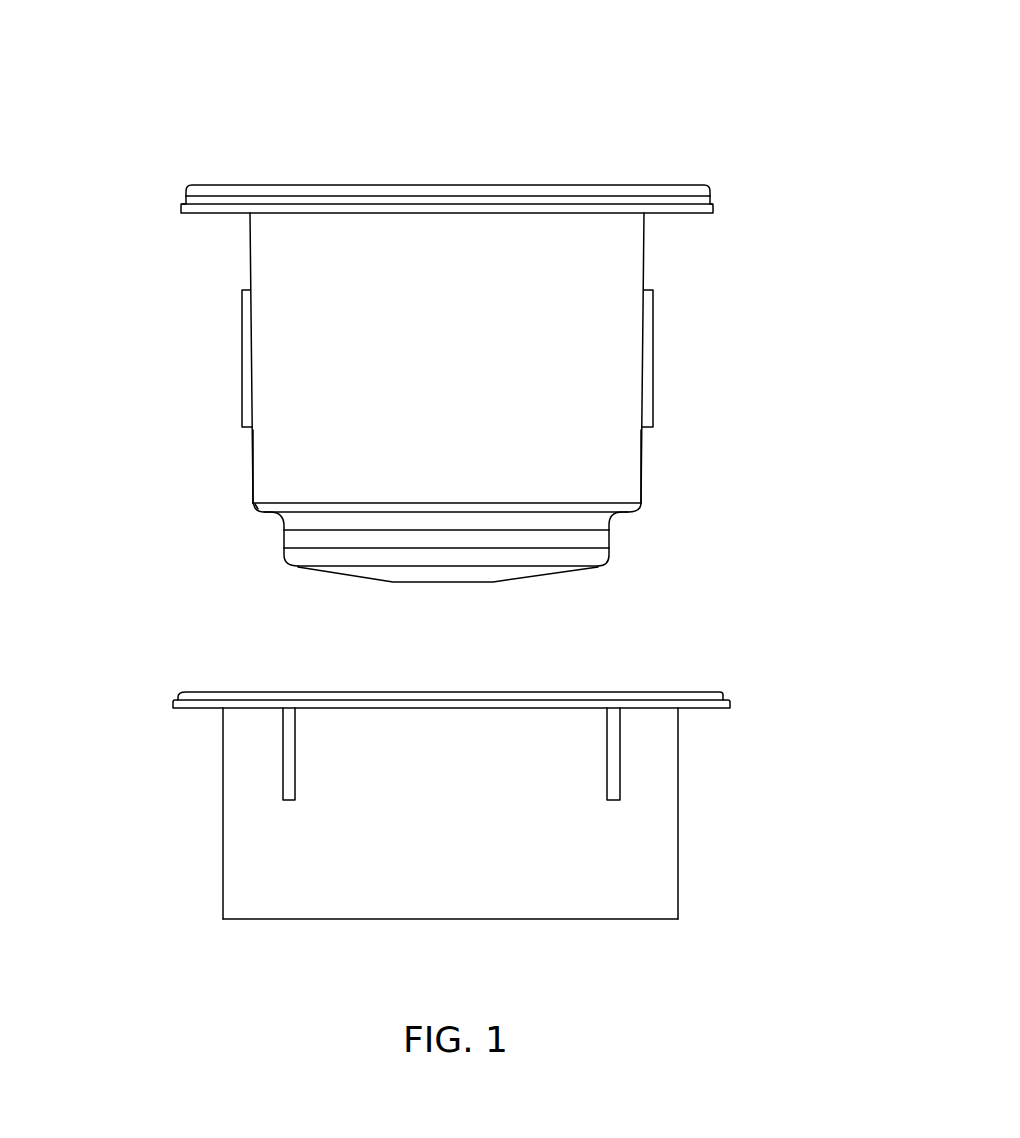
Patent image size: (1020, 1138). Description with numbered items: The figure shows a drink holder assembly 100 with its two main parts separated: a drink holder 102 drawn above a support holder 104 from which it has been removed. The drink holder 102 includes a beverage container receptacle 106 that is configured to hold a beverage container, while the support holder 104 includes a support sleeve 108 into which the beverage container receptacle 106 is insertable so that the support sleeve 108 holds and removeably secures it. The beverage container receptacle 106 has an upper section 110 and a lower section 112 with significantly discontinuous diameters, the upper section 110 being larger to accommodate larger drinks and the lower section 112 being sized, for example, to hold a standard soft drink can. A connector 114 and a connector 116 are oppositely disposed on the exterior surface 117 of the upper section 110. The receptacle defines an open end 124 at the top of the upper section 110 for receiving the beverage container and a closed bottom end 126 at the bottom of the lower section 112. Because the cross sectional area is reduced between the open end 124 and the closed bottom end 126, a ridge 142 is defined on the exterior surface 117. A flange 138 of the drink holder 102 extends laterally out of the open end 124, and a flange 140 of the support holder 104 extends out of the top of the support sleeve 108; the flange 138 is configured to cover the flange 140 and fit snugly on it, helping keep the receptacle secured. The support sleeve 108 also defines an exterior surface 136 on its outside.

The drink holder assembly 100 is at (717, 79).
The drink holder 102 is at (174, 312).
The support holder 104 is at (186, 810).
The beverage container receptacle 106 is at (644, 262).
The support sleeve 108 is at (679, 820).
The upper section 110 is at (641, 468).
The lower section 112 is at (609, 547).
The connector 114 is at (242, 356).
The connector 116 is at (653, 348).
The exterior surface 117 is at (262, 461).
The open end 124 is at (537, 174).
The closed bottom end 126 is at (490, 584).
The exterior surface 136 is at (632, 905).
The flange 138 is at (694, 194).
The flange 140 is at (705, 697).
The ridge 142 is at (259, 506).